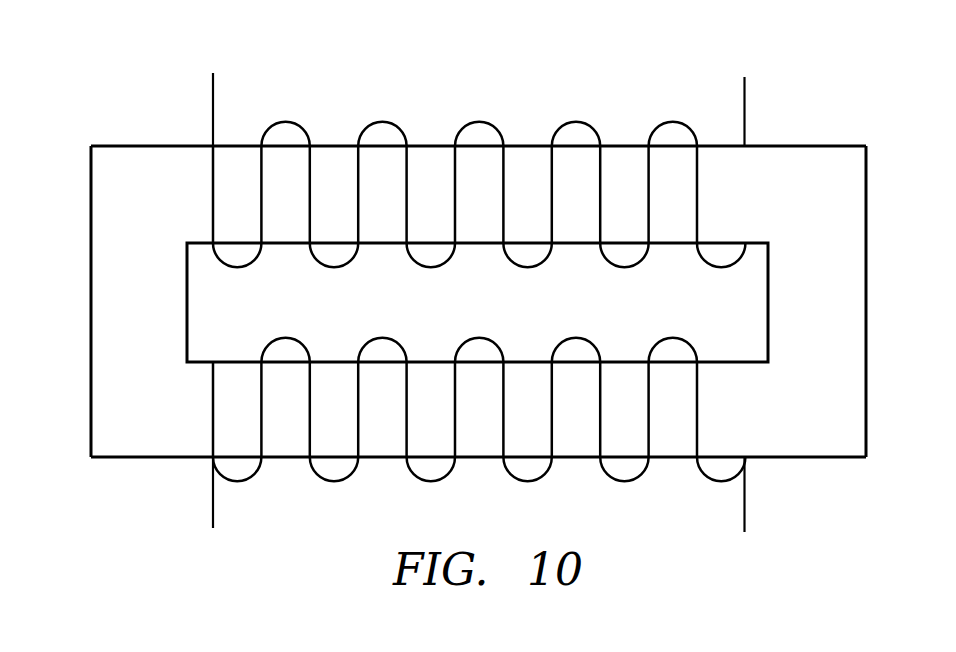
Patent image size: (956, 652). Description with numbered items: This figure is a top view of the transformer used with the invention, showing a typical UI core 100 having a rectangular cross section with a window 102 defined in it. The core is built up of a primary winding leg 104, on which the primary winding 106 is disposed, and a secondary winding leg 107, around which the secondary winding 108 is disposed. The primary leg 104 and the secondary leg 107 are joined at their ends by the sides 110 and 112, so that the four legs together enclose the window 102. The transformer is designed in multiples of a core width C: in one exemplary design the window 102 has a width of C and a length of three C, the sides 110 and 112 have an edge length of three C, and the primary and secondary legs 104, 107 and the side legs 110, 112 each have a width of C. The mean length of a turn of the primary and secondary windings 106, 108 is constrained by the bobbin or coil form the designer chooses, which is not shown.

The UI core 100 is at (797, 82).
The window 102 is at (503, 315).
The primary winding leg 104 is at (617, 153).
The primary winding 106 is at (212, 95).
The secondary winding leg 107 is at (617, 453).
The secondary winding 108 is at (212, 503).
The side 110 is at (862, 305).
The side 112 is at (97, 299).